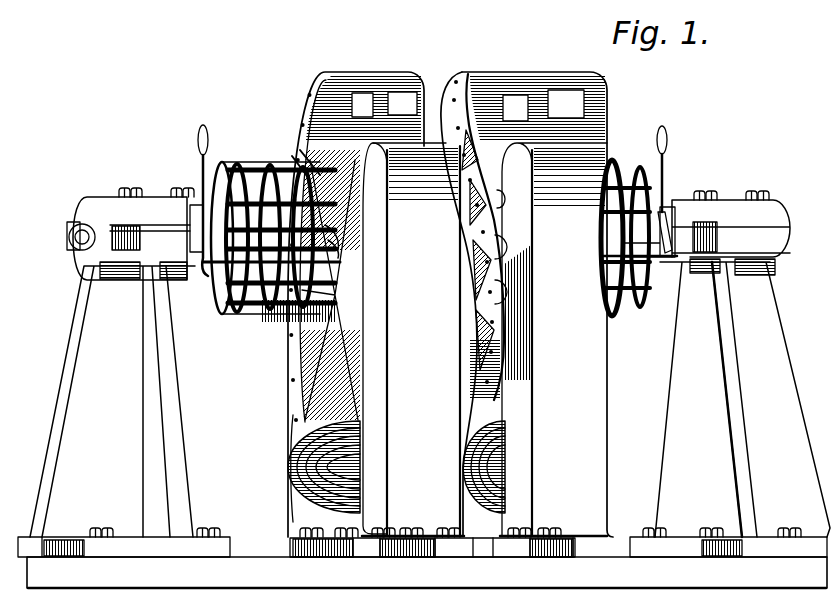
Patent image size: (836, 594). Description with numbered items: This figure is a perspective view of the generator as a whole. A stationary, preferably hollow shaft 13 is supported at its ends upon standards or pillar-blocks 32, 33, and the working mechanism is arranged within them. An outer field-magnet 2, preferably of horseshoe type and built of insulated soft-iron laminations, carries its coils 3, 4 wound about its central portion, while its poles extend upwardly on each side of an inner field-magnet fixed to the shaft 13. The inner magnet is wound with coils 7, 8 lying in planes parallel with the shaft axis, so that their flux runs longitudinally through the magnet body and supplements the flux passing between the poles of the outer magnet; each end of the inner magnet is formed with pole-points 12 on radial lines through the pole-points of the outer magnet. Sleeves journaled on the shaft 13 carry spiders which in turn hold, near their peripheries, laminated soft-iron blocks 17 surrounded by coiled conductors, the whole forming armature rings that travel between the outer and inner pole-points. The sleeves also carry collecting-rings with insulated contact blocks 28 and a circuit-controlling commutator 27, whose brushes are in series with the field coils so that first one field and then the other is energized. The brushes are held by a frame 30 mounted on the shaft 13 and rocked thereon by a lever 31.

The outer field-magnet 2 is at (484, 339).
The coil 3 is at (485, 468).
The coil 4 is at (305, 467).
The coil 7 is at (486, 228).
The coil 8 is at (340, 250).
The pole-points 12 is at (348, 214).
The shaft 13 is at (72, 254).
The blocks 17 is at (404, 102).
The commutator 27 is at (262, 162).
The block 28 is at (288, 152).
The frame 30 is at (205, 270).
The lever 31 is at (202, 186).
The standard or pillar-block 32 is at (124, 372).
The standard or pillar-block 33 is at (726, 374).